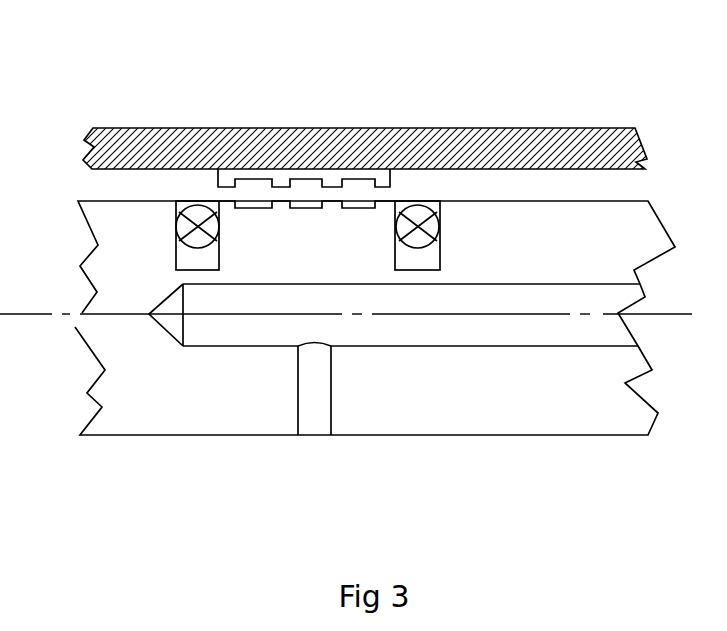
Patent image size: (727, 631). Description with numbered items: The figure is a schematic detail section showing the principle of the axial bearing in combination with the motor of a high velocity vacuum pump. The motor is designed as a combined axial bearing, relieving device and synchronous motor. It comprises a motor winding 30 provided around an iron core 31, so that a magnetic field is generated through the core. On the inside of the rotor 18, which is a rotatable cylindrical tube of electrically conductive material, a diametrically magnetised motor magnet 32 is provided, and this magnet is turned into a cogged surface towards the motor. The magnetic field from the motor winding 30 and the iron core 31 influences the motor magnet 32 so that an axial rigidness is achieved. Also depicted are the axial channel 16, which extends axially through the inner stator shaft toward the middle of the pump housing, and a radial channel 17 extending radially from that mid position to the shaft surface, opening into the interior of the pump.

The axial channel 16 is at (383, 332).
The radial channel 17 is at (317, 387).
The rotor 18 is at (170, 162).
The motor winding 30 is at (413, 227).
The iron core 31 is at (375, 242).
The motor magnet 32 is at (332, 182).